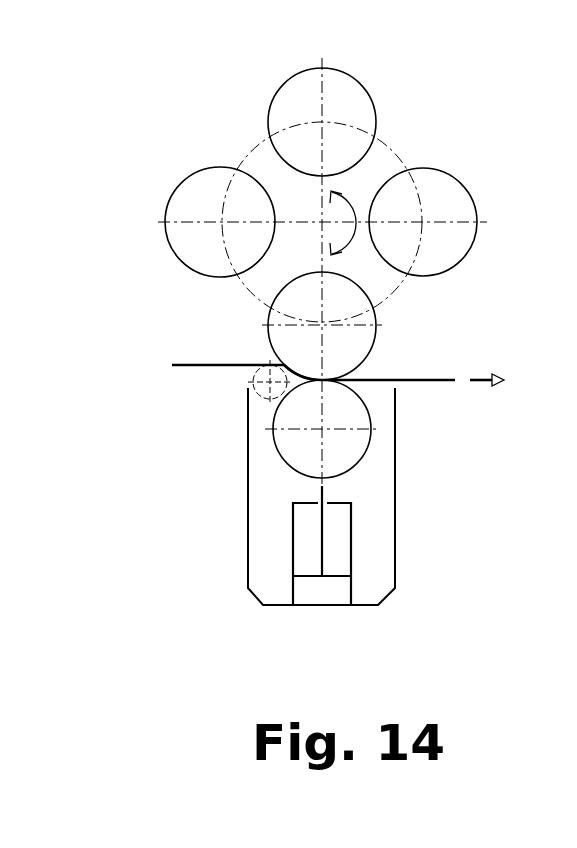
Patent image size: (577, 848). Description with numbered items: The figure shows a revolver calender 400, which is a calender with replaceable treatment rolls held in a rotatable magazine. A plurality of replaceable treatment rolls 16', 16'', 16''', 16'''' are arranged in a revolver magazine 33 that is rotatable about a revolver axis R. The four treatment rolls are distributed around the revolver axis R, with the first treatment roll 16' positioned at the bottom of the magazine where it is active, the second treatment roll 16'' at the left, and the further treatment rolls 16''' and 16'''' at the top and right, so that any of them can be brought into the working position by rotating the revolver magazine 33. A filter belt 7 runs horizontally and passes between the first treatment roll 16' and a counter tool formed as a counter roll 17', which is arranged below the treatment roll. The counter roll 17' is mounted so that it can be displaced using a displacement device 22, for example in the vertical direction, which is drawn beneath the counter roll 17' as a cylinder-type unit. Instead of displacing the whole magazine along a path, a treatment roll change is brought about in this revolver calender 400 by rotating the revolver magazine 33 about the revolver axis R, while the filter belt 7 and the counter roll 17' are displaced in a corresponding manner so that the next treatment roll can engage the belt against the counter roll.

The revolver calender 400 is at (172, 138).
The revolver magazine 33 is at (252, 147).
The treatment roll 16''' is at (367, 99).
The treatment roll 16'''' is at (472, 198).
The second treatment roll 16'' is at (161, 250).
The first treatment roll 16' is at (376, 326).
The revolver axis R is at (318, 226).
The filter belt 7 is at (266, 386).
The counter roll 17' is at (230, 496).
The displacement device 22 is at (338, 550).